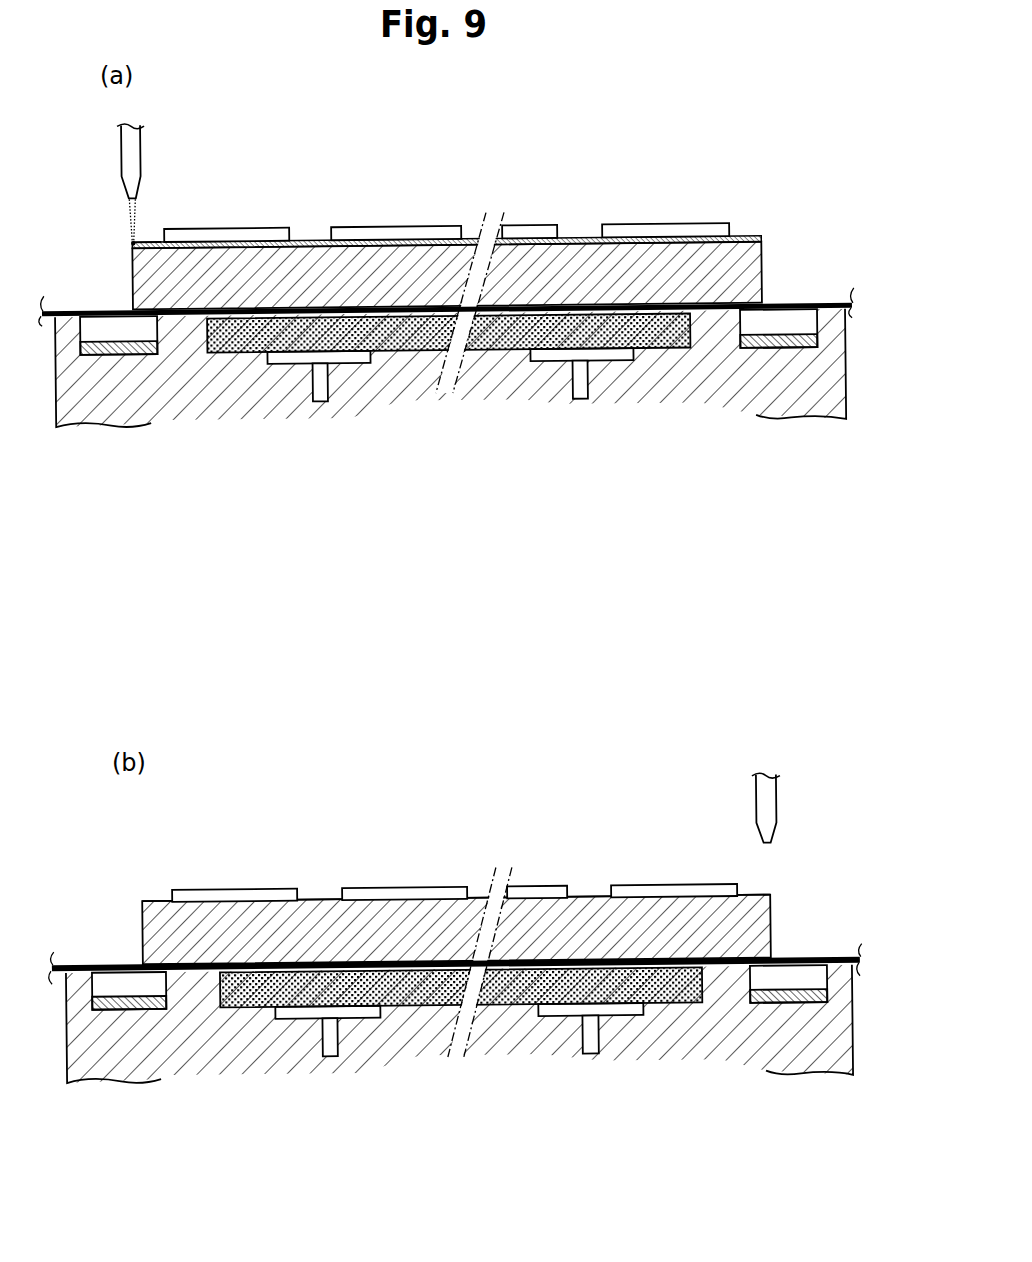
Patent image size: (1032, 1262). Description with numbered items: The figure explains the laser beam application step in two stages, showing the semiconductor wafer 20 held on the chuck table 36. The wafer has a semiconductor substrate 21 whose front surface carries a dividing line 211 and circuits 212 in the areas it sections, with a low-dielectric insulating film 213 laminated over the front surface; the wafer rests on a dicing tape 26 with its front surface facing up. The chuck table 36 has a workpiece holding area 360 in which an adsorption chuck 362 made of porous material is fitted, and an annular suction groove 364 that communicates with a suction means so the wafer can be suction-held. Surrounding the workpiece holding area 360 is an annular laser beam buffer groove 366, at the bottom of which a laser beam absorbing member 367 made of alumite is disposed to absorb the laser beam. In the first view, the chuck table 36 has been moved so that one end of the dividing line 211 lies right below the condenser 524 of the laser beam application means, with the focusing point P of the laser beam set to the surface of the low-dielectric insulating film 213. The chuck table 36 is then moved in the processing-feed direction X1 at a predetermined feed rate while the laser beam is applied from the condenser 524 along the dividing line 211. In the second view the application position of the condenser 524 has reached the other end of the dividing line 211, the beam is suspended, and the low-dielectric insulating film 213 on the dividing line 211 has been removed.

The semiconductor wafer 20 is at (750, 200).
The semiconductor substrate 21 is at (755, 274).
The dividing line 211 is at (766, 242).
The circuit 212 is at (267, 226).
The low-dielectric insulating film 213 is at (150, 239).
The dicing tape 26 is at (833, 307).
The chuck table 36 is at (845, 377).
The workpiece holding area 360 is at (505, 320).
The adsorption chuck 362 is at (352, 345).
The annular suction groove 364 is at (278, 358).
The laser beam buffer groove 366 is at (93, 320).
The laser beam absorbing member 367 is at (125, 338).
The condenser 524 is at (143, 137).
The focusing point P is at (131, 238).
The processing-feed direction X1 is at (505, 415).